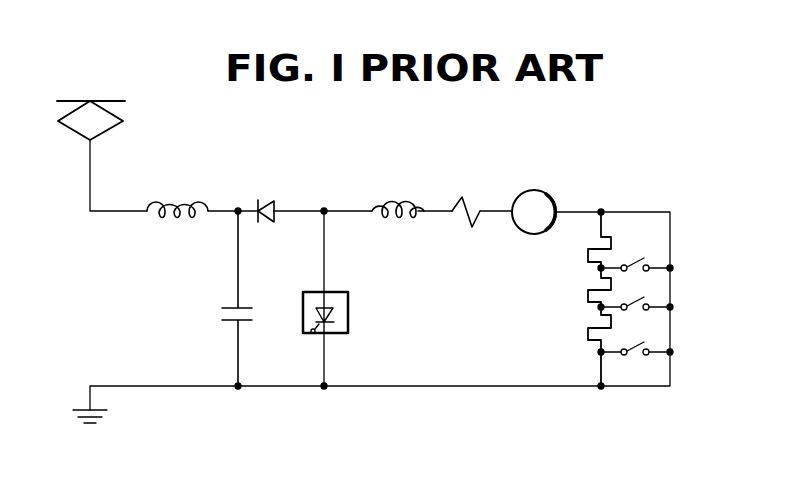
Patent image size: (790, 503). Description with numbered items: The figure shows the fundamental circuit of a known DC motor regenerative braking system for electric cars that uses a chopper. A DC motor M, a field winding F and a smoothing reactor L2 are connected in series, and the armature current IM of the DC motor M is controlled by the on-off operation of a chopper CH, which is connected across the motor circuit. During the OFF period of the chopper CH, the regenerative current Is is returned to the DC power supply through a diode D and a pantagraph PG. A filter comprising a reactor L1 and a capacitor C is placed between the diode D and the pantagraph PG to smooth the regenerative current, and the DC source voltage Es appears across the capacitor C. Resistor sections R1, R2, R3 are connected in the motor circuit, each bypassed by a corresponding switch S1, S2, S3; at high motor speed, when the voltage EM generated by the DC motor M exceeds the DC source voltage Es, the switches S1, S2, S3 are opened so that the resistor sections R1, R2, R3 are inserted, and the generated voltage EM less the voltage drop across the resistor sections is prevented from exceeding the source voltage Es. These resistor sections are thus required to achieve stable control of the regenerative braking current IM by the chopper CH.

The pantagraph PG is at (115, 124).
The reactor L1 is at (170, 200).
The diode D is at (262, 203).
The smoothing reactor L2 is at (394, 202).
The field winding F is at (467, 206).
The DC motor M is at (550, 197).
The capacitor C is at (222, 309).
The chopper CH is at (346, 298).
The resistor section R1 is at (597, 262).
The resistor section R2 is at (596, 302).
The resistor section R3 is at (595, 340).
The switch S1 is at (636, 258).
The switch S2 is at (636, 298).
The switch S3 is at (636, 343).
The regenerative current Is is at (75, 208).
The DC source voltage Es is at (128, 228).
The armature current IM is at (366, 227).
The generated voltage EM is at (547, 245).